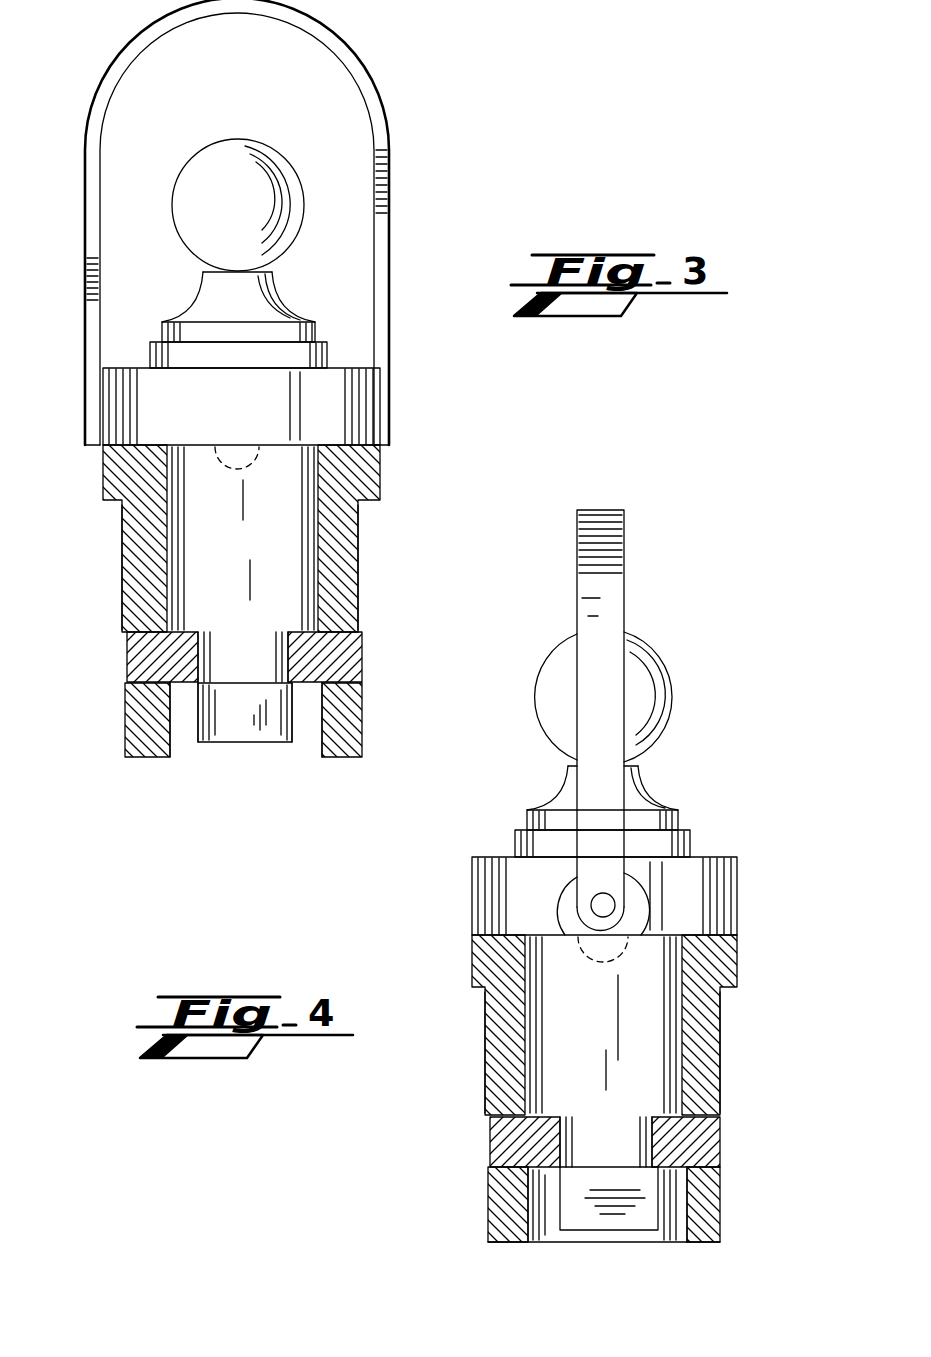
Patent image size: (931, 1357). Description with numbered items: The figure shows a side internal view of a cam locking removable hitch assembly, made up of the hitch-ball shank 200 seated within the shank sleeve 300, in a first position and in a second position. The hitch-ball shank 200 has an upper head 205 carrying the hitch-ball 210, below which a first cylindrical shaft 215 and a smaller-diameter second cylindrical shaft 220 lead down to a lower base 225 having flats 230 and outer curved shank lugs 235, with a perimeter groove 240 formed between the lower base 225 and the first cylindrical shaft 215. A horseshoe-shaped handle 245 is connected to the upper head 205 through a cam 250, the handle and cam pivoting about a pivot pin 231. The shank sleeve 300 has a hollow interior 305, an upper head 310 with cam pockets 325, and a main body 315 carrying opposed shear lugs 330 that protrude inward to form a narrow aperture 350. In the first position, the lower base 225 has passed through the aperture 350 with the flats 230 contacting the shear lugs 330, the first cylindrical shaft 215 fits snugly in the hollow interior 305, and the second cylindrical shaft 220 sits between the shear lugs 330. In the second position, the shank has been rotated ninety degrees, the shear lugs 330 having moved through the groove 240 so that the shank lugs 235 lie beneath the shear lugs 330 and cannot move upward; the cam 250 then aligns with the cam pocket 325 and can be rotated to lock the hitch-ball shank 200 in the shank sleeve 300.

In FIG. 3, the hitch-ball shank 200 is at (440, 222).
In FIG. 4, the hitch-ball shank 200 is at (697, 567).
In FIG. 3, the upper head 205 is at (380, 403).
In FIG. 4, the upper head 205 is at (723, 860).
In FIG. 3, the hitch-ball 210 is at (185, 213).
In FIG. 4, the hitch-ball 210 is at (665, 695).
In FIG. 3, the first cylindrical shaft 215 is at (200, 557).
In FIG. 4, the first cylindrical shaft 215 is at (560, 1047).
In FIG. 3, the second cylindrical shaft 220 is at (130, 710).
In FIG. 4, the second cylindrical shaft 220 is at (537, 1210).
In FIG. 3, the lower base 225 is at (283, 782).
In FIG. 4, the lower base 225 is at (622, 1258).
In FIG. 3, the flats 230 is at (185, 730).
In FIG. 4, the flats 230 is at (587, 1207).
In FIG. 4, the pivot pin 231 is at (672, 890).
In FIG. 3, the shank lugs 235 is at (235, 740).
In FIG. 4, the shank lugs 235 is at (537, 1217).
In FIG. 4, the perimeter groove 240 is at (540, 1142).
In FIG. 3, the handle 245 is at (360, 47).
In FIG. 4, the handle 245 is at (618, 522).
In FIG. 4, the cam 250 is at (568, 907).
In FIG. 3, the shank sleeve 300 is at (397, 563).
In FIG. 4, the shank sleeve 300 is at (760, 1055).
In FIG. 3, the hollow interior 305 is at (358, 535).
In FIG. 4, the hollow interior 305 is at (720, 1013).
In FIG. 3, the upper head 310 is at (380, 472).
In FIG. 4, the upper head 310 is at (737, 957).
In FIG. 3, the main body 315 is at (120, 522).
In FIG. 4, the main body 315 is at (485, 1010).
In FIG. 3, the cam pockets 325 is at (233, 447).
In FIG. 4, the cam pockets 325 is at (618, 940).
In FIG. 3, the shear lugs 330 is at (137, 660).
In FIG. 4, the shear lugs 330 is at (493, 1133).
In FIG. 3, the aperture 350 is at (290, 673).
In FIG. 4, the aperture 350 is at (723, 1147).